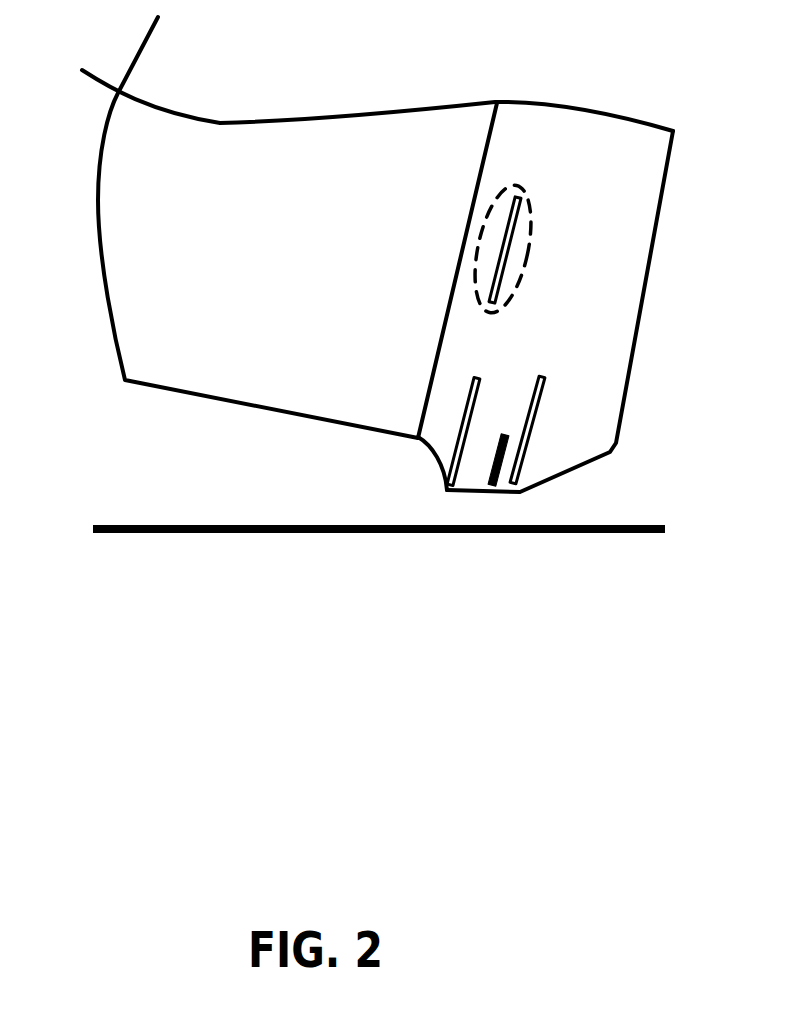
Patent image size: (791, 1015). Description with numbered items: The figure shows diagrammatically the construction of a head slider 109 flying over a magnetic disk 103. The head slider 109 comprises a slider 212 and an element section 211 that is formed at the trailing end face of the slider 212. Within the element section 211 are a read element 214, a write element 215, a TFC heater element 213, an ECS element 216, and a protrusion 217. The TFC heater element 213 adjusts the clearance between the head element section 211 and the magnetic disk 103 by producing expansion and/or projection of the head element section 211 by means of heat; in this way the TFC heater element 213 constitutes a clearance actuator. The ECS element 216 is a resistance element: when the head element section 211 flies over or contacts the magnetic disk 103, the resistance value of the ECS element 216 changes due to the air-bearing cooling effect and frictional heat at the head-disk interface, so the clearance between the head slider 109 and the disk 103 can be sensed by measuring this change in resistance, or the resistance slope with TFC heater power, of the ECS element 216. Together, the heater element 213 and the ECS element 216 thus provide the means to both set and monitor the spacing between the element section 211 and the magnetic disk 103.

The head slider 109 is at (337, 60).
The magnetic disk 103 is at (187, 525).
The element section 211 is at (590, 166).
The slider 212 is at (262, 234).
The TFC heater element 213 is at (513, 262).
The read element 214 is at (458, 430).
The write element 215 is at (535, 413).
The ECS element 216 is at (500, 467).
The protrusion 217 is at (477, 490).